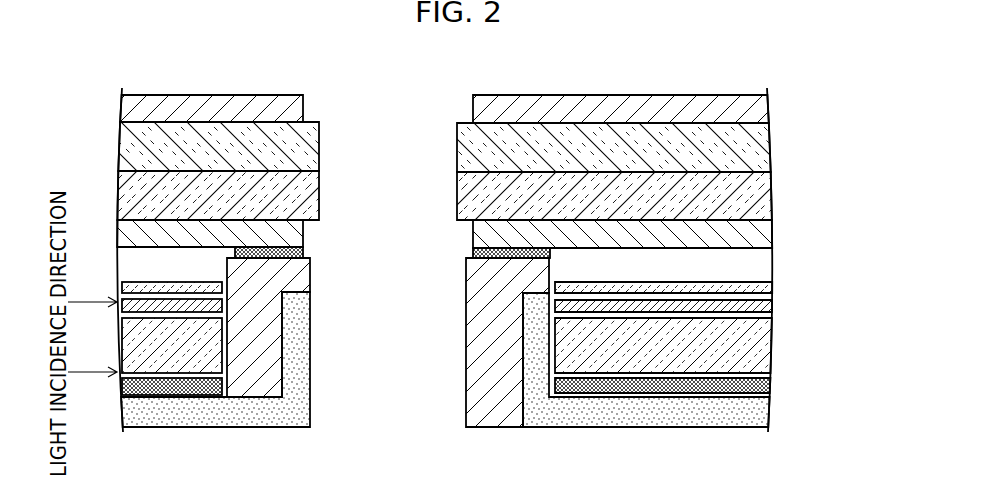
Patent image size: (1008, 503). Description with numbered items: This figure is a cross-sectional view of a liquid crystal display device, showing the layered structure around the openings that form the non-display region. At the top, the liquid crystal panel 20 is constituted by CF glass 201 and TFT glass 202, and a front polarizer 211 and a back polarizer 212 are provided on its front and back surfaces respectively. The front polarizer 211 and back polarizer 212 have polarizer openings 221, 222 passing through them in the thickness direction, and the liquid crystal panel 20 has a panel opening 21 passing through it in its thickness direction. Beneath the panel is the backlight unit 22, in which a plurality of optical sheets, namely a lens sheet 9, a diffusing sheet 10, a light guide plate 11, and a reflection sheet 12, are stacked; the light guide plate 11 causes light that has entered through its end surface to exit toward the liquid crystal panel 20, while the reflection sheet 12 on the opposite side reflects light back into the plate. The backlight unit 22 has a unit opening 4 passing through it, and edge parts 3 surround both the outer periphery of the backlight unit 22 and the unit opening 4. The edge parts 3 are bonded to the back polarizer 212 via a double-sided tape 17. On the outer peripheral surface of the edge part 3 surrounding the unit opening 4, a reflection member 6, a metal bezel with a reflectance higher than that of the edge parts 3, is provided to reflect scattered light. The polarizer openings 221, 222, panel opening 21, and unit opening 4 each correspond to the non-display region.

The panel opening 21 is at (362, 160).
The polarizer opening 221 is at (387, 105).
The polarizer opening 222 is at (388, 237).
The unit opening 4 is at (389, 403).
The front polarizer 211 is at (762, 110).
The CF glass 201 is at (762, 147).
The TFT glass 202 is at (762, 196).
The liquid crystal panel 20 is at (667, 171).
The back polarizer 212 is at (758, 234).
The double-sided tape 17 is at (537, 255).
The lens sheet 9 is at (768, 285).
The diffusing sheet 10 is at (768, 307).
The light guide plate 11 is at (764, 342).
The reflection sheet 12 is at (688, 387).
The reflection member 6 is at (768, 410).
The edge part 3 is at (495, 412).
The backlight unit 22 is at (664, 356).